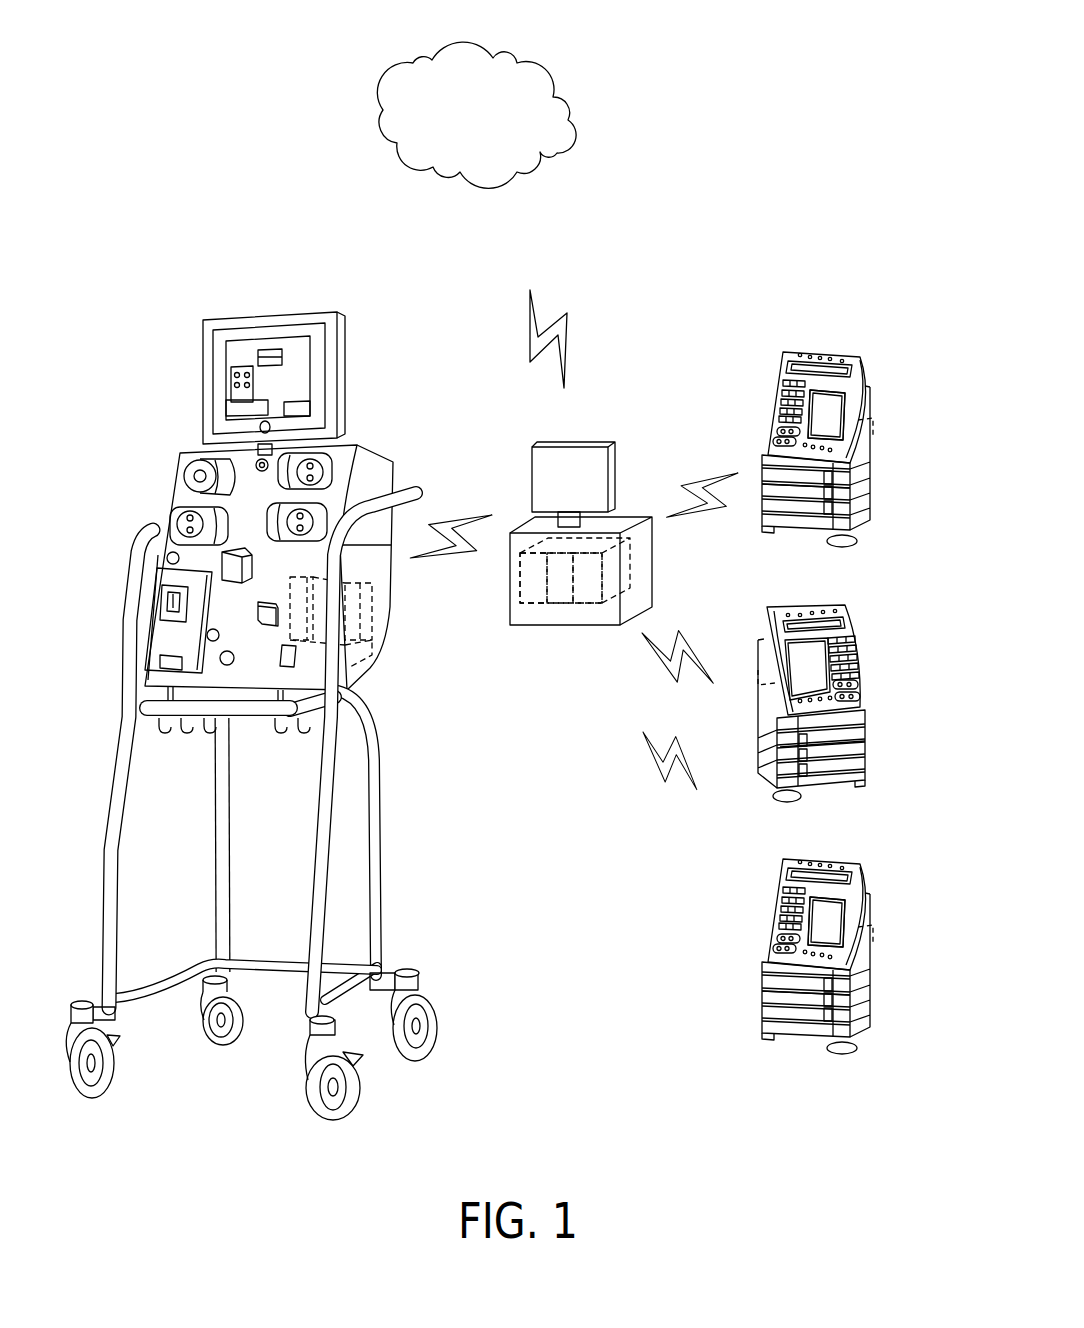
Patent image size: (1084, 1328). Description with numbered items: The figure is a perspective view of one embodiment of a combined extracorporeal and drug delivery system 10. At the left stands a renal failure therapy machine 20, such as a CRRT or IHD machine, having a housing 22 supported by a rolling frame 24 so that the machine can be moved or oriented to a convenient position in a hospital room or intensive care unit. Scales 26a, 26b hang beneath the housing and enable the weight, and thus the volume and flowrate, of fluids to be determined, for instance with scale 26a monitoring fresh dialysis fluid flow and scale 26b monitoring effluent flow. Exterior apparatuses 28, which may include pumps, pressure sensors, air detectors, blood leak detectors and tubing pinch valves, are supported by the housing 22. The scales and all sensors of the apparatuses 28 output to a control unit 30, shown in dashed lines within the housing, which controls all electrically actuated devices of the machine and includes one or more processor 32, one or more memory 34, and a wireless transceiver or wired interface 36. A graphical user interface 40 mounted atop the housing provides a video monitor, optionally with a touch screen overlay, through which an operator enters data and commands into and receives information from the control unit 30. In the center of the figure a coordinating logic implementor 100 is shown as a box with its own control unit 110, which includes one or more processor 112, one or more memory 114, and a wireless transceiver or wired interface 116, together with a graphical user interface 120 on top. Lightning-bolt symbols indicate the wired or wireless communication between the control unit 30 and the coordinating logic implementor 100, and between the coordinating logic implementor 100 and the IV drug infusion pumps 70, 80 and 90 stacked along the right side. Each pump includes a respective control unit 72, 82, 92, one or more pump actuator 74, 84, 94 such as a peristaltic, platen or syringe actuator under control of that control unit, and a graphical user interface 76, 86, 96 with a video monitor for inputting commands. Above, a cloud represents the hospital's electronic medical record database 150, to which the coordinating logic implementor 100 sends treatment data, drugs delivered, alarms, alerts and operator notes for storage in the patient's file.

The combined extracorporeal and drug delivery system 10 is at (829, 120).
The renal failure therapy machine 20 is at (238, 290).
The housing 22 is at (293, 562).
The rolling frame 24 is at (118, 843).
The scale 26a is at (160, 730).
The scale 26b is at (280, 740).
The exterior apparatuses 28 is at (178, 639).
The control unit 30 is at (350, 667).
The processor 32 is at (365, 598).
The memory 34 is at (375, 635).
The wireless transceiver or wired interface 36 is at (290, 633).
The graphical user interface 40 is at (343, 375).
The IV drug infusion pump 70 is at (819, 420).
The control unit 72 is at (877, 428).
The pump actuator 74 is at (813, 492).
The graphical user interface 76 is at (818, 412).
The IV drug infusion pump 80 is at (821, 703).
The control unit 82 is at (757, 680).
The pump actuator 84 is at (857, 735).
The graphical user interface 86 is at (810, 668).
The IV drug infusion pump 90 is at (809, 990).
The control unit 92 is at (873, 937).
The pump actuator 94 is at (775, 990).
The graphical user interface 96 is at (818, 917).
The coordinating logic implementor 100 is at (593, 574).
The control unit 110 is at (630, 555).
The processor 112 is at (532, 588).
The memory 114 is at (558, 590).
The wireless transceiver or wired interface 116 is at (587, 590).
The graphical user interface 120 is at (549, 492).
The electronic medical record database 150 is at (543, 62).